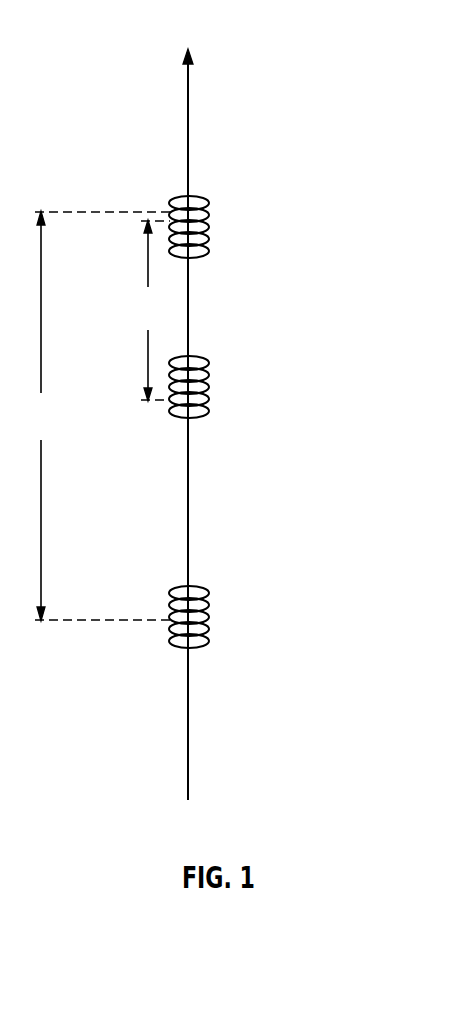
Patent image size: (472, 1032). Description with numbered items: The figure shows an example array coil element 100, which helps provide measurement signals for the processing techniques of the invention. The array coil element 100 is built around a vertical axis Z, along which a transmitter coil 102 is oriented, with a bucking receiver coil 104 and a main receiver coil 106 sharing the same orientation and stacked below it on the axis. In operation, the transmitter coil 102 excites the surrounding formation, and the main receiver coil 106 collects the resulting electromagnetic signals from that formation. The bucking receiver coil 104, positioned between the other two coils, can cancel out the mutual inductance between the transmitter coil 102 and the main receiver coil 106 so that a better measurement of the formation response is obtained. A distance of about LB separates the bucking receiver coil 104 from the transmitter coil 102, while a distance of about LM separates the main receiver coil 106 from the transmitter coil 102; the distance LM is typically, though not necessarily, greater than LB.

The array coil element 100 is at (124, 44).
The transmitter coil 102 is at (236, 216).
The bucking receiver coil 104 is at (237, 367).
The main receiver coil 106 is at (237, 606).
The z-axis Z is at (200, 424).
The distance L_B LB is at (151, 310).
The distance L_M LM is at (97, 416).